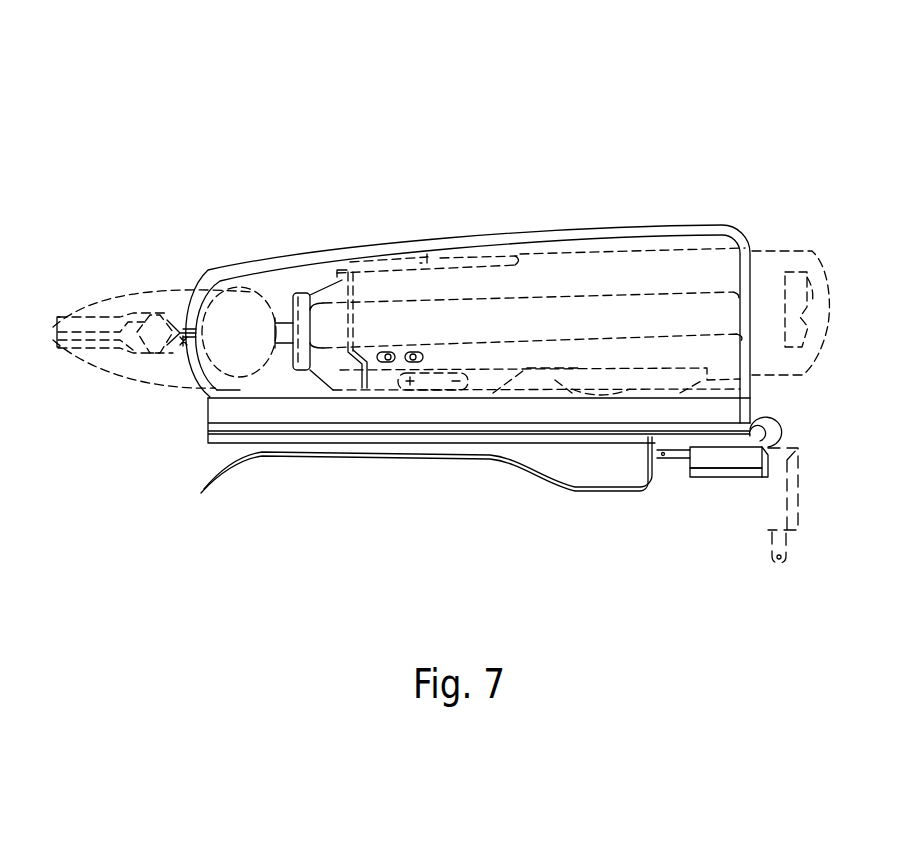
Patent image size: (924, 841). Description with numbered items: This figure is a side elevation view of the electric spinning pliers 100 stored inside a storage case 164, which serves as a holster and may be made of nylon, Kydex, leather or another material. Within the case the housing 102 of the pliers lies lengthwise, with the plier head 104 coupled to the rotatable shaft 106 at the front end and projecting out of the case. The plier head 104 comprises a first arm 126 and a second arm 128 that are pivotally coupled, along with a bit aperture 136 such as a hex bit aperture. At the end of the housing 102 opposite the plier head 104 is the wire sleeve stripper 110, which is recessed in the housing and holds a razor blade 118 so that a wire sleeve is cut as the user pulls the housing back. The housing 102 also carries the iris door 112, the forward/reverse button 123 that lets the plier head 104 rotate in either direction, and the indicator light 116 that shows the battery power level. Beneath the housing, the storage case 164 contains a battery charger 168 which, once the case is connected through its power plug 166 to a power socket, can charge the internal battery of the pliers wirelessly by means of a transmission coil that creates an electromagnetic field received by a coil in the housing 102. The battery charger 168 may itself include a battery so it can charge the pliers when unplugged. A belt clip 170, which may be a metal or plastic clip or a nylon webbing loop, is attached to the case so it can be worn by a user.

The electric spinning pliers apparatus 100 is at (216, 100).
The housing 102 is at (757, 262).
The plier head 104 is at (173, 290).
The rotatable shaft 106 is at (284, 323).
The wire sleeve stripper 110 is at (798, 293).
The iris door 112 is at (620, 393).
The indicator light 116 is at (380, 360).
The razor blade 118 is at (806, 317).
The forward/reverse button 123 is at (443, 382).
The first arm 126 is at (88, 308).
The second arm 128 is at (95, 357).
The bit aperture 136 is at (186, 342).
The storage case 164 is at (367, 247).
The power plug 166 is at (720, 470).
The battery charger 168 is at (262, 412).
The belt clip 170 is at (388, 452).